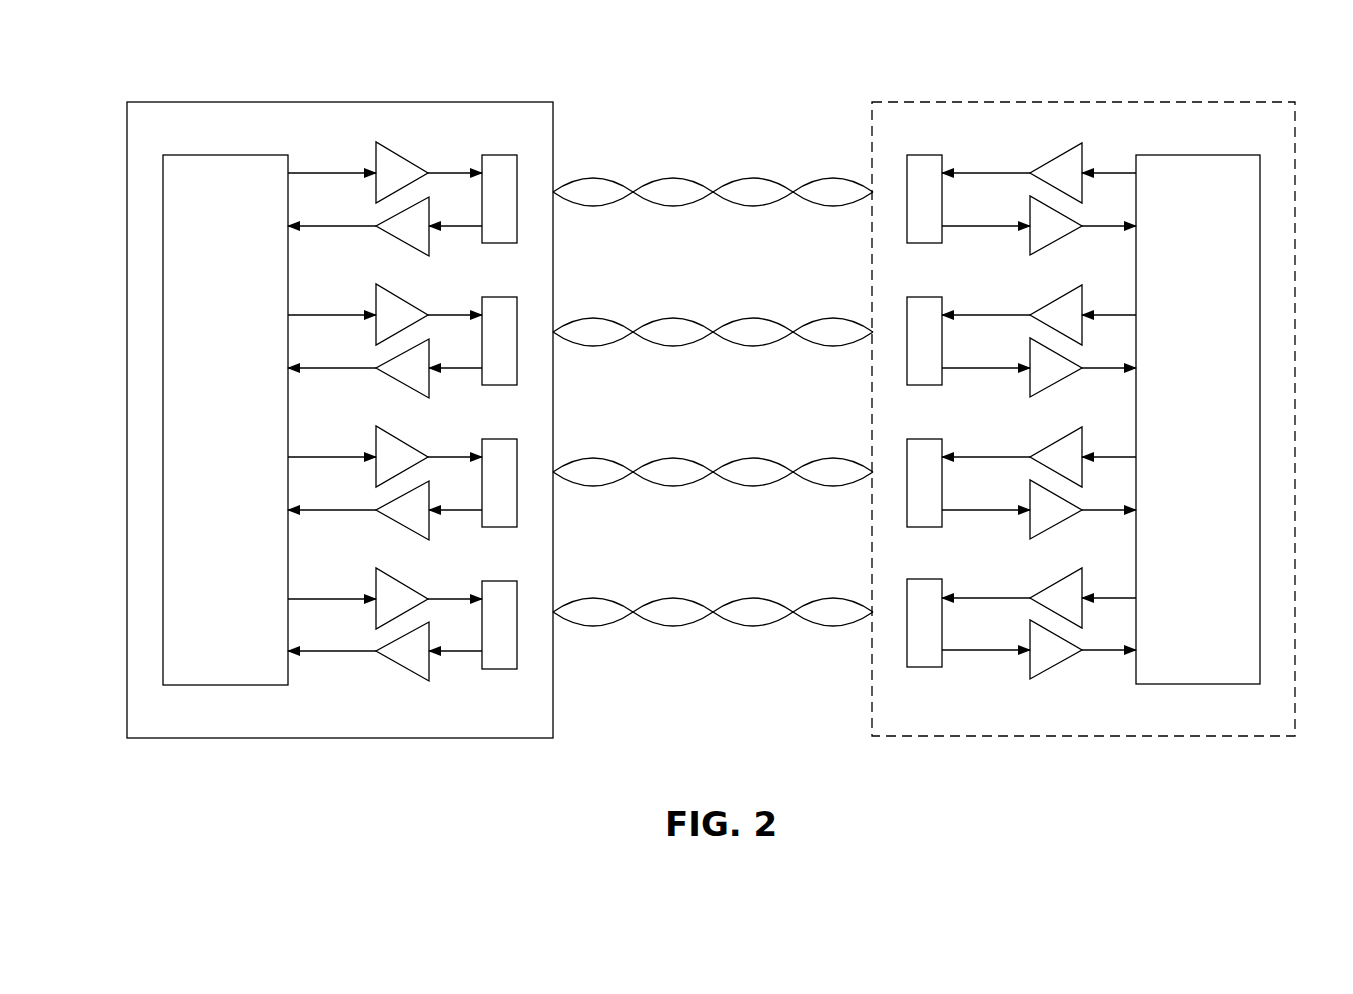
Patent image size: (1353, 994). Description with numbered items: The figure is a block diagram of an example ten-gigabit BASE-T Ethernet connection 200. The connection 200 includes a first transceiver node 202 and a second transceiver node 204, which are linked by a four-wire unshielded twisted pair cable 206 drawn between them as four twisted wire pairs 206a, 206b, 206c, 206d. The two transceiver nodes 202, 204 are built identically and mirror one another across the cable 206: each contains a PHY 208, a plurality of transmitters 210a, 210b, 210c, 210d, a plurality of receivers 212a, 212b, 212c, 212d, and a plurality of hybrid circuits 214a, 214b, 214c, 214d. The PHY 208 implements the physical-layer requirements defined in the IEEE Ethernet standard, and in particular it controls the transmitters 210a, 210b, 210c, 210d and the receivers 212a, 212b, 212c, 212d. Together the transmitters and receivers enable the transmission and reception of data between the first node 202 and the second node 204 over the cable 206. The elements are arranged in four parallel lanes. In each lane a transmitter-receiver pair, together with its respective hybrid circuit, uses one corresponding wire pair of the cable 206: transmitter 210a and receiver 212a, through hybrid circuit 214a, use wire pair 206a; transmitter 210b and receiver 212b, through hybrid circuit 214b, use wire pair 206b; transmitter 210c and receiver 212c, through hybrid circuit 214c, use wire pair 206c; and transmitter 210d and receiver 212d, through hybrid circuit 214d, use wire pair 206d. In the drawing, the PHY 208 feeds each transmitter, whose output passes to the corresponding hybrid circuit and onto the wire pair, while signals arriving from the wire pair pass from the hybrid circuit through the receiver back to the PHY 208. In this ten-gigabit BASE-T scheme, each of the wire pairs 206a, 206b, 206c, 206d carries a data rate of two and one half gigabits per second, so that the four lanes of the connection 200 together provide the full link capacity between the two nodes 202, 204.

The 10GBASE-T Ethernet connection 200 is at (1332, 61).
The first transceiver node 202 is at (330, 101).
The second transceiver node 204 is at (1045, 101).
The unshielded twisted pair (UTP) cable 206 is at (713, 329).
The wire pair 206a is at (737, 175).
The wire pair 206b is at (744, 313).
The wire pair 206c is at (744, 453).
The wire pair 206d is at (762, 595).
The PHY 208 is at (253, 686).
The transmitter 210a is at (400, 156).
The transmitter 210b is at (400, 298).
The transmitter 210c is at (400, 438).
The transmitter 210d is at (400, 580).
The receiver 212a is at (390, 243).
The receiver 212b is at (390, 385).
The receiver 212c is at (390, 527).
The receiver 212d is at (416, 672).
The hybrid circuit 214a is at (510, 140).
The hybrid circuit 214b is at (510, 282).
The hybrid circuit 214c is at (495, 439).
The hybrid circuit 214d is at (493, 581).